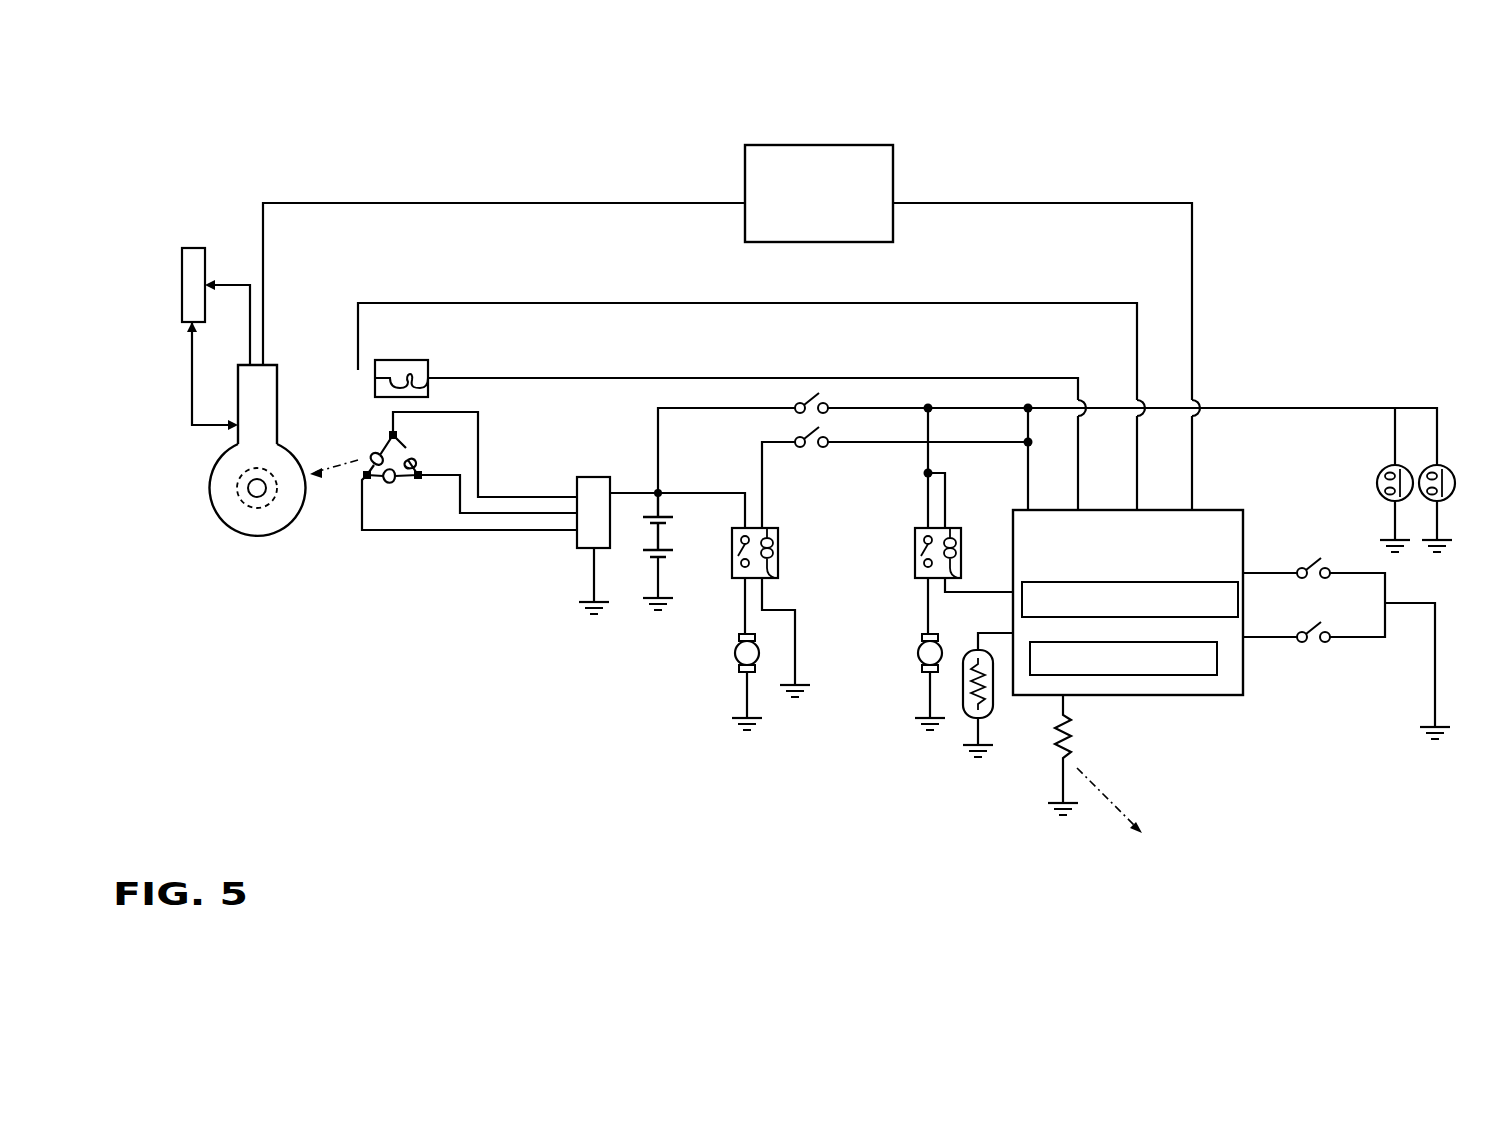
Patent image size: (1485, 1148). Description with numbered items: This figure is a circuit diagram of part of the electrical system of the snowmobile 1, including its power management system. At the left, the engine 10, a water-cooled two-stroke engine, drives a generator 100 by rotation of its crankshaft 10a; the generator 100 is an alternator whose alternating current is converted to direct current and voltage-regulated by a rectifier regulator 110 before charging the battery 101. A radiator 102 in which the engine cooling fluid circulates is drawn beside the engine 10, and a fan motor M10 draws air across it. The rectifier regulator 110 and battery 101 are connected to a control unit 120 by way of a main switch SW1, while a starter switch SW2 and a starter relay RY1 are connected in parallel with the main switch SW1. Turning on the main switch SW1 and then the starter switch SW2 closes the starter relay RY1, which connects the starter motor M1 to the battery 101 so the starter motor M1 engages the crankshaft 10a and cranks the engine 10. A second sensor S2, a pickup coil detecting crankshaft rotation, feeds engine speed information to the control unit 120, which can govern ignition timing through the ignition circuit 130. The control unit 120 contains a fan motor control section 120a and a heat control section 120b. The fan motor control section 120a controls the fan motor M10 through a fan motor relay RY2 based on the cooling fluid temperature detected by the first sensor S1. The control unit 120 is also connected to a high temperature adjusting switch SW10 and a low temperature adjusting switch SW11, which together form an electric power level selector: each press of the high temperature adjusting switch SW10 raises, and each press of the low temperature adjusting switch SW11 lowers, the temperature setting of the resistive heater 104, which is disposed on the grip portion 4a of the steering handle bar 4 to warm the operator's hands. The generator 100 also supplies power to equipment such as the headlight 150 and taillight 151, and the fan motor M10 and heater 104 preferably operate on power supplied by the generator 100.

The snowmobile 1 is at (829, 85).
The ignition circuit 130 is at (893, 162).
The radiator 102 is at (193, 246).
The second sensor S2 is at (420, 340).
The generator 100 is at (202, 523).
The engine 10 is at (292, 546).
The crankshaft 10a is at (258, 498).
The rectifier regulator 110 is at (569, 548).
The battery 101 is at (648, 538).
The main switch SW1 is at (816, 394).
The starter switch SW2 is at (818, 447).
The starter relay RY1 is at (780, 565).
The fan motor relay RY2 is at (955, 490).
The starter motor M1 is at (735, 653).
The fan motor M10 is at (918, 653).
The first sensor S1 is at (963, 718).
The control unit 120 is at (1235, 507).
The fan motor control section 120a is at (1240, 600).
The heat control section 120b is at (1218, 658).
The high temperature adjusting switch SW10 is at (1313, 567).
The low temperature adjusting switch SW11 is at (1310, 642).
The headlight 150 is at (1378, 483).
The taillight 151 is at (1445, 467).
The heater 104 is at (1081, 744).
The steering handle bar 4 is at (753, 471).
The grip portion 4a is at (1175, 848).